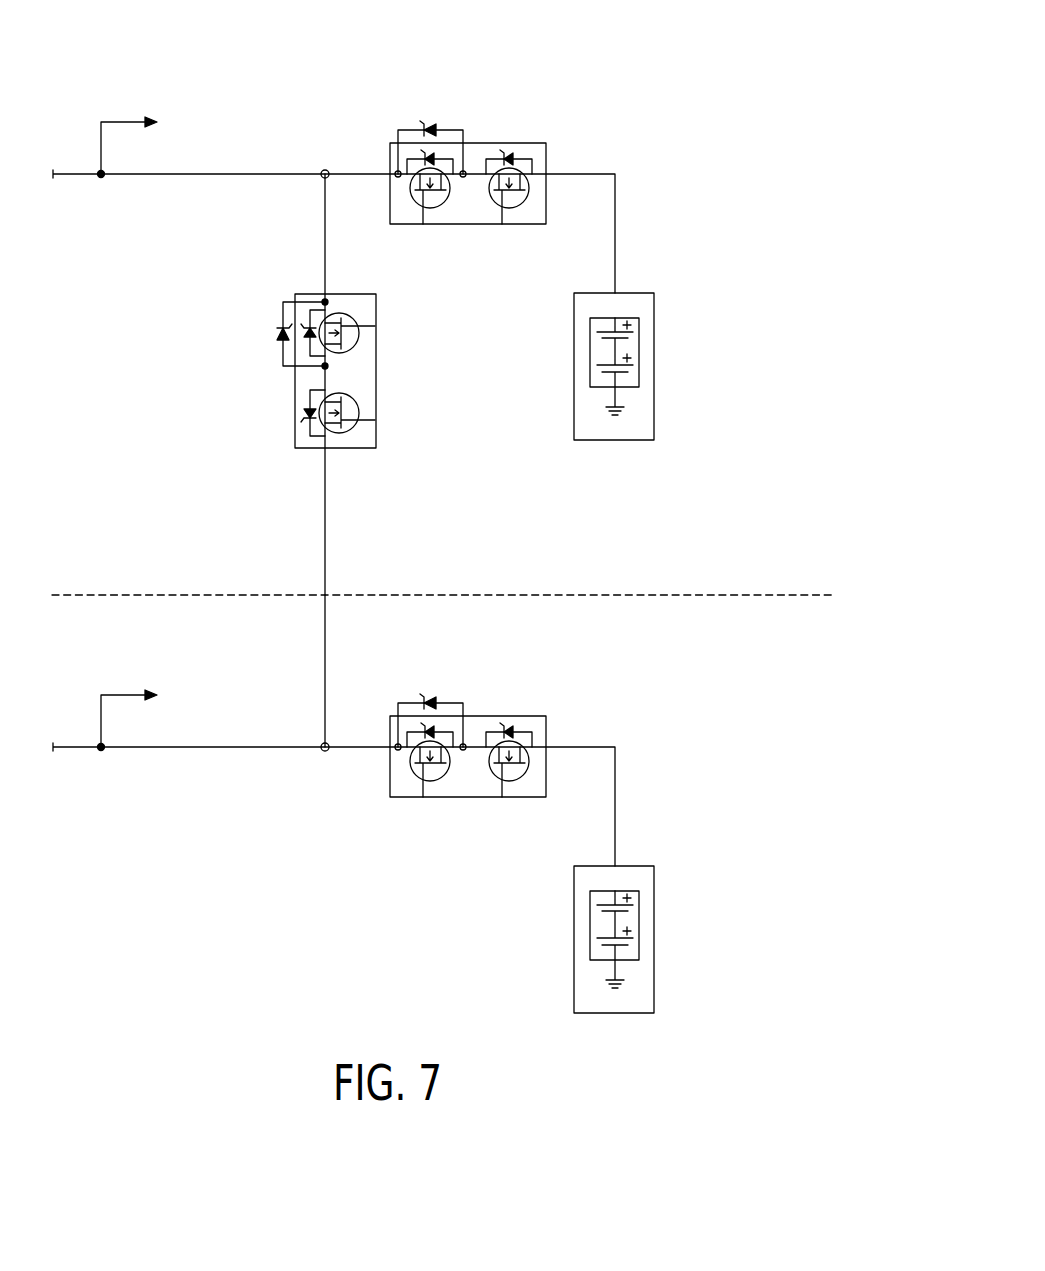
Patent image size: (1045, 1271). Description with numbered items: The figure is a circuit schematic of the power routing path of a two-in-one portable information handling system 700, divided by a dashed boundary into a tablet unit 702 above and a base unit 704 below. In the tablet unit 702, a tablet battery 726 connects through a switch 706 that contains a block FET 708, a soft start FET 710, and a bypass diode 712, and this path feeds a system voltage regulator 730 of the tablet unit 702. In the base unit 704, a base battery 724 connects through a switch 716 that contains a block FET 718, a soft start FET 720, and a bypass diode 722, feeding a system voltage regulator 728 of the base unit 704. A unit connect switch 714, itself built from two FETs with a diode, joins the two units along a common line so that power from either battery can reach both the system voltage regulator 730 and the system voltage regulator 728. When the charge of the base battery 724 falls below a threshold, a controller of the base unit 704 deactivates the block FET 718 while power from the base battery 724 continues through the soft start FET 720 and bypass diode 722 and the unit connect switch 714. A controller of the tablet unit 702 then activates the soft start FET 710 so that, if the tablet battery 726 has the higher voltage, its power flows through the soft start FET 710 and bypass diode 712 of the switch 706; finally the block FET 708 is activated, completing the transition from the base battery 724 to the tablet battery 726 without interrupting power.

The information handling system 700 is at (695, 92).
The tablet unit 702 is at (597, 567).
The base unit 704 is at (585, 625).
The switch 706 is at (547, 153).
The block FET 708 is at (430, 224).
The soft start FET 710 is at (508, 224).
The bypass diode 712 is at (448, 130).
The unit connect switch 714 is at (377, 367).
The switch 716 is at (511, 755).
The block FET 718 is at (437, 803).
The soft start FET 720 is at (516, 803).
The bypass diode 722 is at (441, 688).
The base battery 724 is at (651, 939).
The tablet battery 726 is at (654, 365).
The system voltage regulator 728 is at (161, 687).
The system voltage regulator 730 is at (117, 122).